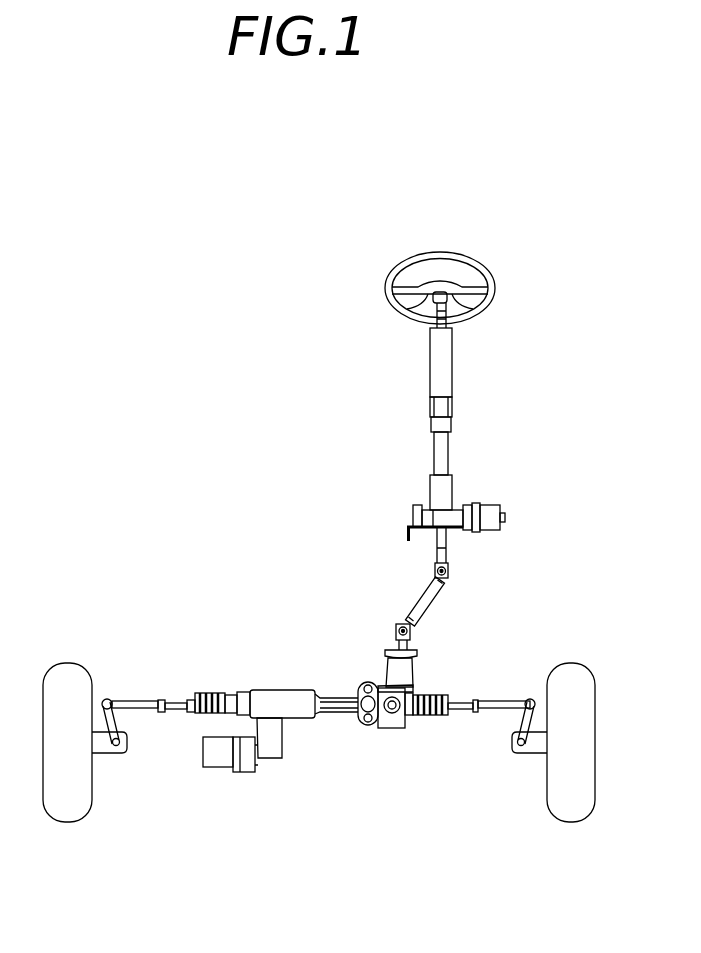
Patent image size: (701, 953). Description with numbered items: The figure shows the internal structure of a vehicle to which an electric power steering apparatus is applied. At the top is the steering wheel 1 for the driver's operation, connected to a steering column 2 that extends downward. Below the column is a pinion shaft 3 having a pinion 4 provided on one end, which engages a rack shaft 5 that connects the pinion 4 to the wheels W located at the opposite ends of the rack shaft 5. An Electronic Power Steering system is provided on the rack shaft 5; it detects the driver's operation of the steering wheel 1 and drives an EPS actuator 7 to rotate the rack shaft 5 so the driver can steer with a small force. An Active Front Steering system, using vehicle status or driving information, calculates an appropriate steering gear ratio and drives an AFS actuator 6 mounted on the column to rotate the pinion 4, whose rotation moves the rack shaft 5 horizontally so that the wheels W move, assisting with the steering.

The steering wheel 1 is at (397, 262).
The steering column 2 is at (458, 360).
The pinion shaft 3 is at (445, 593).
The pinion 4 is at (406, 673).
The rack shaft 5 is at (321, 723).
The AFS actuator 6 is at (490, 505).
The EPS actuator 7 is at (270, 703).
The wheels W is at (76, 816).